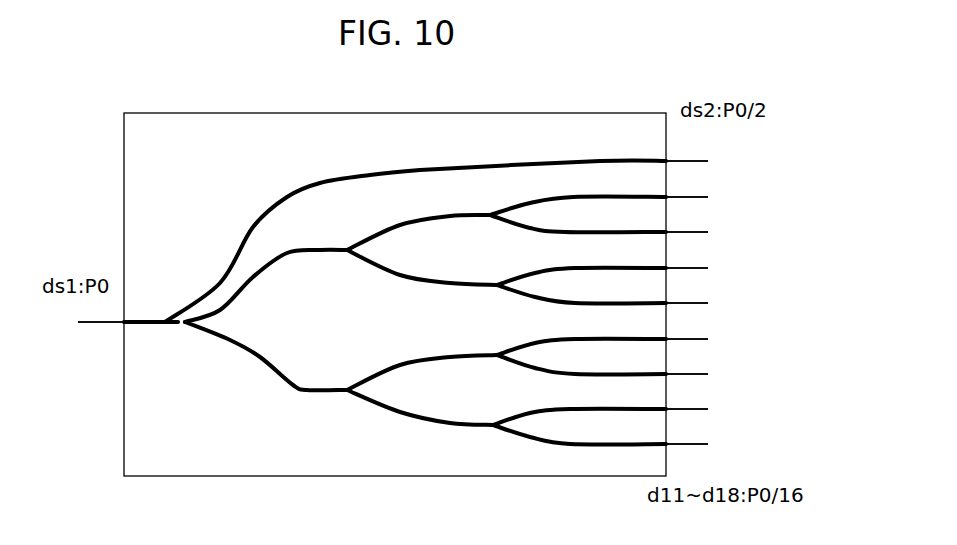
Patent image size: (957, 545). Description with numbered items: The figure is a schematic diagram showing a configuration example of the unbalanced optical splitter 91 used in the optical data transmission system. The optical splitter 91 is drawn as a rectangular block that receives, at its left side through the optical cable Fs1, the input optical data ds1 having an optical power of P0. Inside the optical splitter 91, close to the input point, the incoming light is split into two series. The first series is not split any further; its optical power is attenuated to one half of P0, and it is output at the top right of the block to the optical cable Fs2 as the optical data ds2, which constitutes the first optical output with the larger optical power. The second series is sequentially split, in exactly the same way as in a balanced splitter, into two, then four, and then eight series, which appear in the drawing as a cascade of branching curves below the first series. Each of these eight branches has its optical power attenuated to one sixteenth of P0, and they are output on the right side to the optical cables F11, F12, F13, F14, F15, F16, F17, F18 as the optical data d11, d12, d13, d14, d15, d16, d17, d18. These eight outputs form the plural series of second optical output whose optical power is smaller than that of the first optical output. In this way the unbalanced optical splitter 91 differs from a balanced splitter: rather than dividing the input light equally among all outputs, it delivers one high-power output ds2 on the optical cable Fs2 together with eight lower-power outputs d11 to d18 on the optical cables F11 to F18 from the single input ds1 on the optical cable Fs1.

The unbalanced optical splitter 91 is at (473, 113).
The optical data ds1 is at (101, 310).
The optical cable Fs1 is at (93, 326).
The optical data ds2 is at (687, 150).
The optical cable Fs2 is at (708, 161).
The optical data d11 is at (600, 194).
The optical data d12 is at (600, 221).
The optical data d13 is at (603, 265).
The optical data d14 is at (603, 292).
The optical data d15 is at (603, 335).
The optical data d16 is at (603, 363).
The optical data d17 is at (601, 405).
The optical data d18 is at (601, 433).
The optical cable F11 is at (708, 197).
The optical cable F12 is at (708, 232).
The optical cable F13 is at (708, 268).
The optical cable F14 is at (708, 303).
The optical cable F15 is at (708, 339).
The optical cable F16 is at (708, 374).
The optical cable F17 is at (708, 409).
The optical cable F18 is at (708, 444).